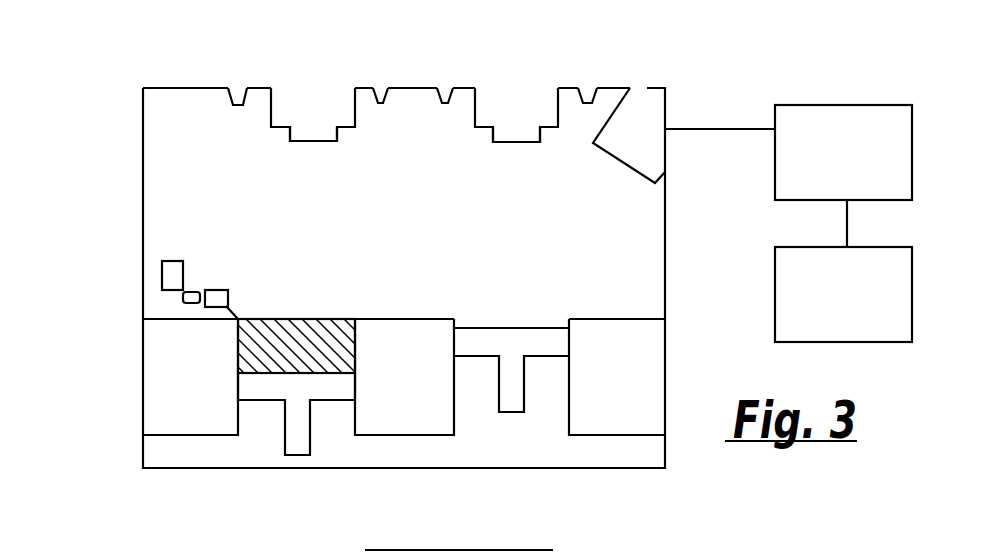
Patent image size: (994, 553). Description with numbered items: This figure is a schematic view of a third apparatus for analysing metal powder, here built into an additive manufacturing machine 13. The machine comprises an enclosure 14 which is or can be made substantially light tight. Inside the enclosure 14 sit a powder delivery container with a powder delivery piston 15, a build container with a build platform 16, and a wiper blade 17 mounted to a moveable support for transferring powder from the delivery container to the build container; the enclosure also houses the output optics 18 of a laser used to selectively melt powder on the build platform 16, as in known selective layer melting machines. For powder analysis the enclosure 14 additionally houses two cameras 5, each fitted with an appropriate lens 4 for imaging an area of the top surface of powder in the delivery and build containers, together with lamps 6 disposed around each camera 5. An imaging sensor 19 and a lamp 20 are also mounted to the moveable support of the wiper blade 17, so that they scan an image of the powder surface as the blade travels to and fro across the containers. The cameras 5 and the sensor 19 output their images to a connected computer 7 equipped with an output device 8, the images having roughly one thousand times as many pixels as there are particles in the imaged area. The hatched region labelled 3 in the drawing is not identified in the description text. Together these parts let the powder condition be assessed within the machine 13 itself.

The sensor element 3 is at (305, 335).
The lens 4 is at (310, 133).
The camera 5 is at (332, 100).
The lamp 6 is at (448, 87).
The computer 7 is at (788, 152).
The output device 8 is at (843, 271).
The additive manufacturing machine 13 is at (128, 111).
The enclosure 14 is at (143, 188).
The powder delivery piston 15 is at (272, 388).
The build platform 16 is at (507, 338).
The wiper blade 17 is at (227, 309).
The output optics 18 is at (633, 128).
The imaging sensor 19 is at (172, 273).
The lamp 20 is at (190, 297).